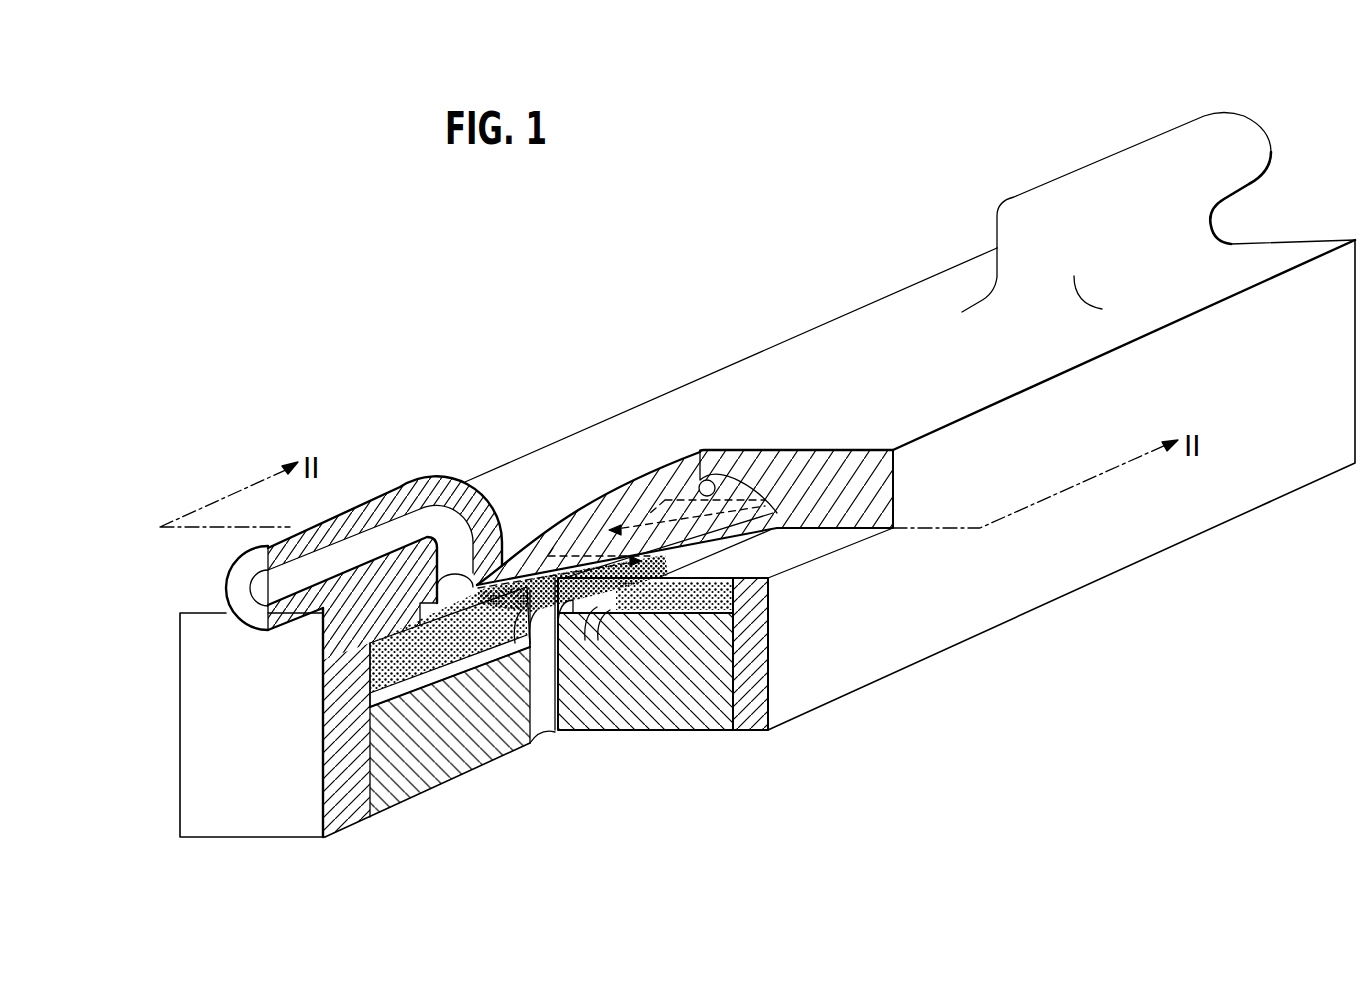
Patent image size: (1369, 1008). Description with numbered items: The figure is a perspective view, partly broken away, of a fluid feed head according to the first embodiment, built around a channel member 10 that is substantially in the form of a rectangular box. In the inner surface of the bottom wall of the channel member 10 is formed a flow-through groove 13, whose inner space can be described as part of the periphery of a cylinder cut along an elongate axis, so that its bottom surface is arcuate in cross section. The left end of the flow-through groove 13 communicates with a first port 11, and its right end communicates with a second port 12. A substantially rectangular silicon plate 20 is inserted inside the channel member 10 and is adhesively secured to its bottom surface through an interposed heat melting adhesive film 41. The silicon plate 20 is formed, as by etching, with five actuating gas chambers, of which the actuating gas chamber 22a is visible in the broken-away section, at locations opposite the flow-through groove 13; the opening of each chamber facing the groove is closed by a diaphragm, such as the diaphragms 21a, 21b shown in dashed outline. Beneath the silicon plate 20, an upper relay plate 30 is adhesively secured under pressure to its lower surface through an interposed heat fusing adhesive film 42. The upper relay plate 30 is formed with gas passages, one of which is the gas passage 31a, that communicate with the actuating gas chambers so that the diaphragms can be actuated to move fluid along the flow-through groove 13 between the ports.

The channel member 10 is at (891, 207).
The first port 11 is at (262, 586).
The second port 12 is at (1253, 143).
The flow-through groove 13 is at (710, 478).
The silicon plate 20 is at (708, 612).
The diaphragm 21a is at (545, 548).
The diaphragm 21b is at (662, 522).
The actuating gas chamber 22a is at (588, 612).
The upper relay plate 30 is at (412, 778).
The gas passage 31a is at (538, 708).
The heat melting adhesive film 41 is at (370, 659).
The heat fusing adhesive film 42 is at (645, 600).